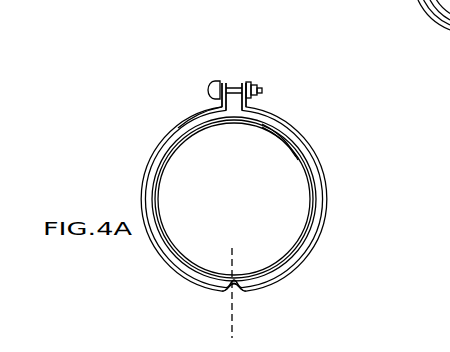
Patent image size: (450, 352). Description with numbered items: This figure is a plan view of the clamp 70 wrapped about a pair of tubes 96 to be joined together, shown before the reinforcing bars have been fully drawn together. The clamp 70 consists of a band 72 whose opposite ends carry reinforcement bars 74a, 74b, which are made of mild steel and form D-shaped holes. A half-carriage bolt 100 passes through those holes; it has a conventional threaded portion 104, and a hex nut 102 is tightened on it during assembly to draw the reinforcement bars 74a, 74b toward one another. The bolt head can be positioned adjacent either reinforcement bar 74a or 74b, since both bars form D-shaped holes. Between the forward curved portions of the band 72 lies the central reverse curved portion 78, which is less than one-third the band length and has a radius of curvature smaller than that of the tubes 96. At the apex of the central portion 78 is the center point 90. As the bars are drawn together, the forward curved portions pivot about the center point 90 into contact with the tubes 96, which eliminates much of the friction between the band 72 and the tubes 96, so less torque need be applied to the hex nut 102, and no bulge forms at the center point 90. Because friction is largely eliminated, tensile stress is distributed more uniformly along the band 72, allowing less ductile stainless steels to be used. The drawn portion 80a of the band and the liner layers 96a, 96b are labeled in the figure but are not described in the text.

The clamp 70 is at (264, 173).
The band 72 is at (328, 212).
The reinforcement bar 74a is at (219, 82).
The reinforcement bar 74b is at (248, 82).
The central reverse curved portion 78 is at (243, 279).
The outer band portion 80a is at (177, 127).
The center point 90 is at (231, 290).
The tubes 96 is at (193, 269).
The inner liner layer 96a is at (280, 138).
The outer liner layer 96b is at (290, 141).
The half-carriage bolt 100 is at (209, 89).
The hex nut 102 is at (255, 84).
The threaded portion 104 is at (262, 93).